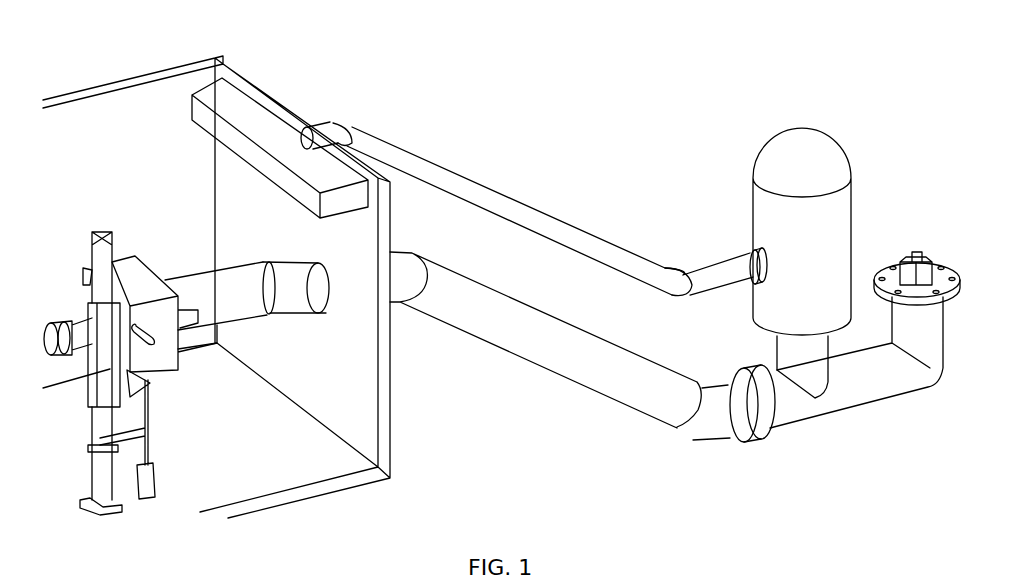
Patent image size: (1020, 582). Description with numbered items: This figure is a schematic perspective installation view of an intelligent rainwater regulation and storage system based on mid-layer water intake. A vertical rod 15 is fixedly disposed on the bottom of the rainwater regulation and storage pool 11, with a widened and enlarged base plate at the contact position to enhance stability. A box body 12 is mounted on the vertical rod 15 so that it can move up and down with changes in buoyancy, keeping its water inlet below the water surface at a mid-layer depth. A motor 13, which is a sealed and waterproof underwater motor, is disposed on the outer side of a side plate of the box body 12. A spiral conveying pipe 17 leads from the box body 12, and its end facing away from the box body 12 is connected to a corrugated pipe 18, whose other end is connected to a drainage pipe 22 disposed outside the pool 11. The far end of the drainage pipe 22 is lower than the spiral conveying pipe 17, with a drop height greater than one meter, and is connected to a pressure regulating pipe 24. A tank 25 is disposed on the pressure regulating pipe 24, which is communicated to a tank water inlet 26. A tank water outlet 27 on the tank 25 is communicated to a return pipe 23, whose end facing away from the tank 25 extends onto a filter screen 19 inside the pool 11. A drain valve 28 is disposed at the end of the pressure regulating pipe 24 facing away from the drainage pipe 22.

The rainwater regulation and storage pool 11 is at (384, 480).
The box body 12 is at (163, 350).
The motor 13 is at (80, 318).
The vertical rod 15 is at (95, 228).
The spiral conveying pipe 17 is at (238, 305).
The corrugated pipe 18 is at (307, 303).
The filter screen 19 is at (247, 113).
The drainage pipe 22 is at (544, 348).
The return pipe 23 is at (380, 143).
The pressure regulating pipe 24 is at (873, 387).
The tank 25 is at (752, 180).
The tank water inlet 26 is at (790, 350).
The tank water outlet 27 is at (755, 248).
The drain valve 28 is at (915, 250).